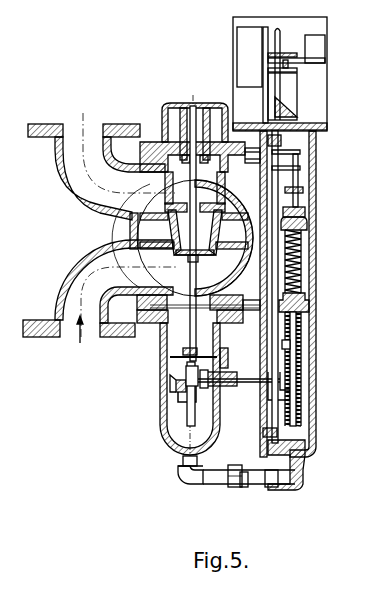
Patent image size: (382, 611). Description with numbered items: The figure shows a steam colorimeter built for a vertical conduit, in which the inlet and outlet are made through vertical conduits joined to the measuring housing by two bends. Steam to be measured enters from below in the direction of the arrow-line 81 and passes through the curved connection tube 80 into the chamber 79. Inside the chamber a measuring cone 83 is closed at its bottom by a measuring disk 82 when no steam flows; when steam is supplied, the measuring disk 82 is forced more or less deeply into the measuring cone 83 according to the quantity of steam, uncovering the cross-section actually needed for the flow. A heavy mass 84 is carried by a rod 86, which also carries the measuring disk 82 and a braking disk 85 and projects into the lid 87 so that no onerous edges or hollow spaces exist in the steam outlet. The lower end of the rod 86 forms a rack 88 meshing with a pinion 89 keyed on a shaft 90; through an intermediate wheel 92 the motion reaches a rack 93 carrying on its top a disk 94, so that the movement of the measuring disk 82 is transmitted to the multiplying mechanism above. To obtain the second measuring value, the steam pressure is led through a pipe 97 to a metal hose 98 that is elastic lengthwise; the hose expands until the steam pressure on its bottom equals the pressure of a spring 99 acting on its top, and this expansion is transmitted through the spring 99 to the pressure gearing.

The chamber 79 is at (182, 238).
The curved connection tube 80 is at (100, 267).
The arrow-line 81 is at (73, 338).
The measuring disk 82 is at (130, 253).
The measuring cone 83 is at (168, 231).
The heavy mass 84 is at (128, 204).
The braking disk 85 is at (172, 355).
The rod 86 is at (196, 338).
The lid 87 is at (166, 104).
The rack 88 is at (187, 416).
The pinion 89 is at (177, 389).
The shaft 90 is at (178, 402).
The intermediate wheel 92 is at (272, 384).
The rack 93 is at (290, 347).
The disk 94 is at (283, 143).
The pipe 97 is at (215, 478).
The metal hose 98 is at (296, 363).
The spring 99 is at (305, 257).